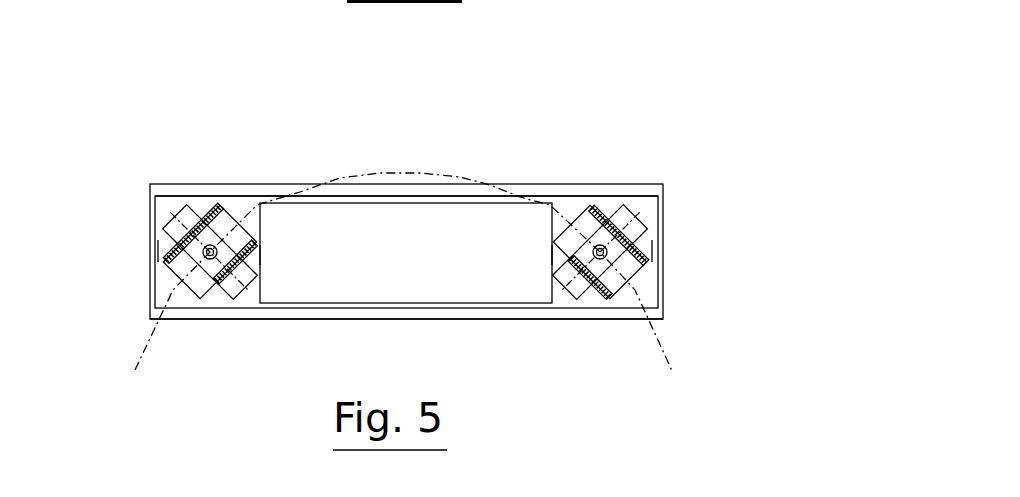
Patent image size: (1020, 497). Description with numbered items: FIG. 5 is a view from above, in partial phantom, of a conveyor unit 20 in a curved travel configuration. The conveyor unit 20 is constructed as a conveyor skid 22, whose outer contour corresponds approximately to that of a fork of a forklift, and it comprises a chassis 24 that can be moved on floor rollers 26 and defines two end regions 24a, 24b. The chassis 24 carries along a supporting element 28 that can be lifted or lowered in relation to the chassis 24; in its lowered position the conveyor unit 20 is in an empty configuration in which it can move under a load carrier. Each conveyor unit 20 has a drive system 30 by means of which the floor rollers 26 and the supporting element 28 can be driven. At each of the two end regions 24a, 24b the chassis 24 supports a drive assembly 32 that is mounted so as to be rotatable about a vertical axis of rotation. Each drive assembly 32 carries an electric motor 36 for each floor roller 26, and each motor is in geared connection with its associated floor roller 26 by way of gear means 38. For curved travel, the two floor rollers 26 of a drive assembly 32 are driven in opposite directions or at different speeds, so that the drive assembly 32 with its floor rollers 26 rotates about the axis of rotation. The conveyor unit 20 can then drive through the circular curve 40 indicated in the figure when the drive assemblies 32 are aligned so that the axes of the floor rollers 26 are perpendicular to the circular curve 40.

The conveyor unit 20 is at (652, 110).
The conveyor skid 22 is at (677, 283).
The chassis 24 is at (417, 186).
The first end region 24a is at (170, 205).
The second end region 24b is at (658, 203).
The floor roller 26 is at (192, 208).
The supporting element 28 is at (514, 186).
The drive system 30 is at (517, 333).
The drive assembly 32 is at (263, 208).
The electric motor 36 is at (215, 208).
The gear means 38 is at (148, 250).
The circular curve 40 is at (372, 175).